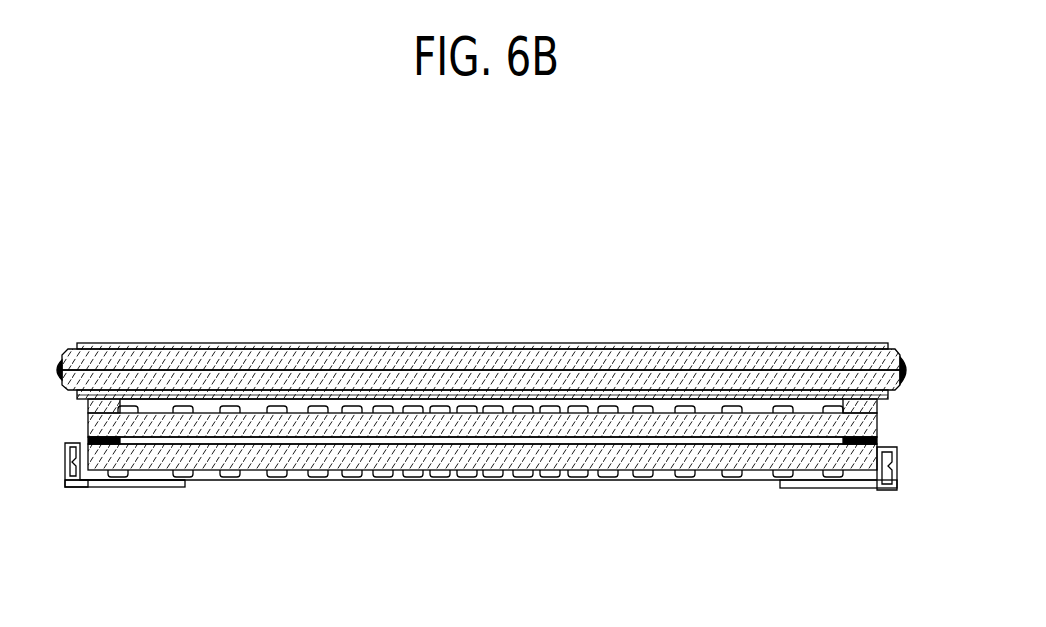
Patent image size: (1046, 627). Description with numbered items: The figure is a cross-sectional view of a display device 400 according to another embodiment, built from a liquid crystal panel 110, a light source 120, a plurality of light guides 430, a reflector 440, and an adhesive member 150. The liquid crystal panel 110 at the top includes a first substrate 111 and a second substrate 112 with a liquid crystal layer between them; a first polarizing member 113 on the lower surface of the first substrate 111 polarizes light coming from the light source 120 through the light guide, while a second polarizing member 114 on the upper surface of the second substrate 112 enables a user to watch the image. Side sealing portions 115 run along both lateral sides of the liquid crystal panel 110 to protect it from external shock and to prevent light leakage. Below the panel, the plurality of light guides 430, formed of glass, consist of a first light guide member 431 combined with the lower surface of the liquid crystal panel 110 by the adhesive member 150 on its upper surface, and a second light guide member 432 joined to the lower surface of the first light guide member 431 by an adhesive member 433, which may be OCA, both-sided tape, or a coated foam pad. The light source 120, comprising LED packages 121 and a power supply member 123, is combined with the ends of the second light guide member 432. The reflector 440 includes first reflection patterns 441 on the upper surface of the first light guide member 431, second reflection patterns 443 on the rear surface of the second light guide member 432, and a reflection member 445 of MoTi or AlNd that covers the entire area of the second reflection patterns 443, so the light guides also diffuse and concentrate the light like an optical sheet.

The display device 400 is at (132, 209).
The liquid crystal panel 110 is at (627, 265).
The first substrate 111 is at (440, 382).
The second substrate 112 is at (498, 363).
The first polarizing member 113 is at (557, 393).
The second polarizing member 114 is at (440, 382).
The side sealing portion 115 is at (903, 360).
The adhesive member 150 is at (843, 405).
The plurality of light guides 430 is at (100, 540).
The first light guide member 431 is at (158, 428).
The second light guide member 432 is at (213, 457).
The adhesive member 433 is at (95, 450).
The reflector 440 is at (578, 549).
The first reflection patterns 441 is at (480, 410).
The second reflection patterns 443 is at (538, 475).
The reflection member 445 is at (568, 478).
The light source 120 is at (820, 572).
The LED packages 121 is at (887, 487).
The power supply member 123 is at (830, 490).